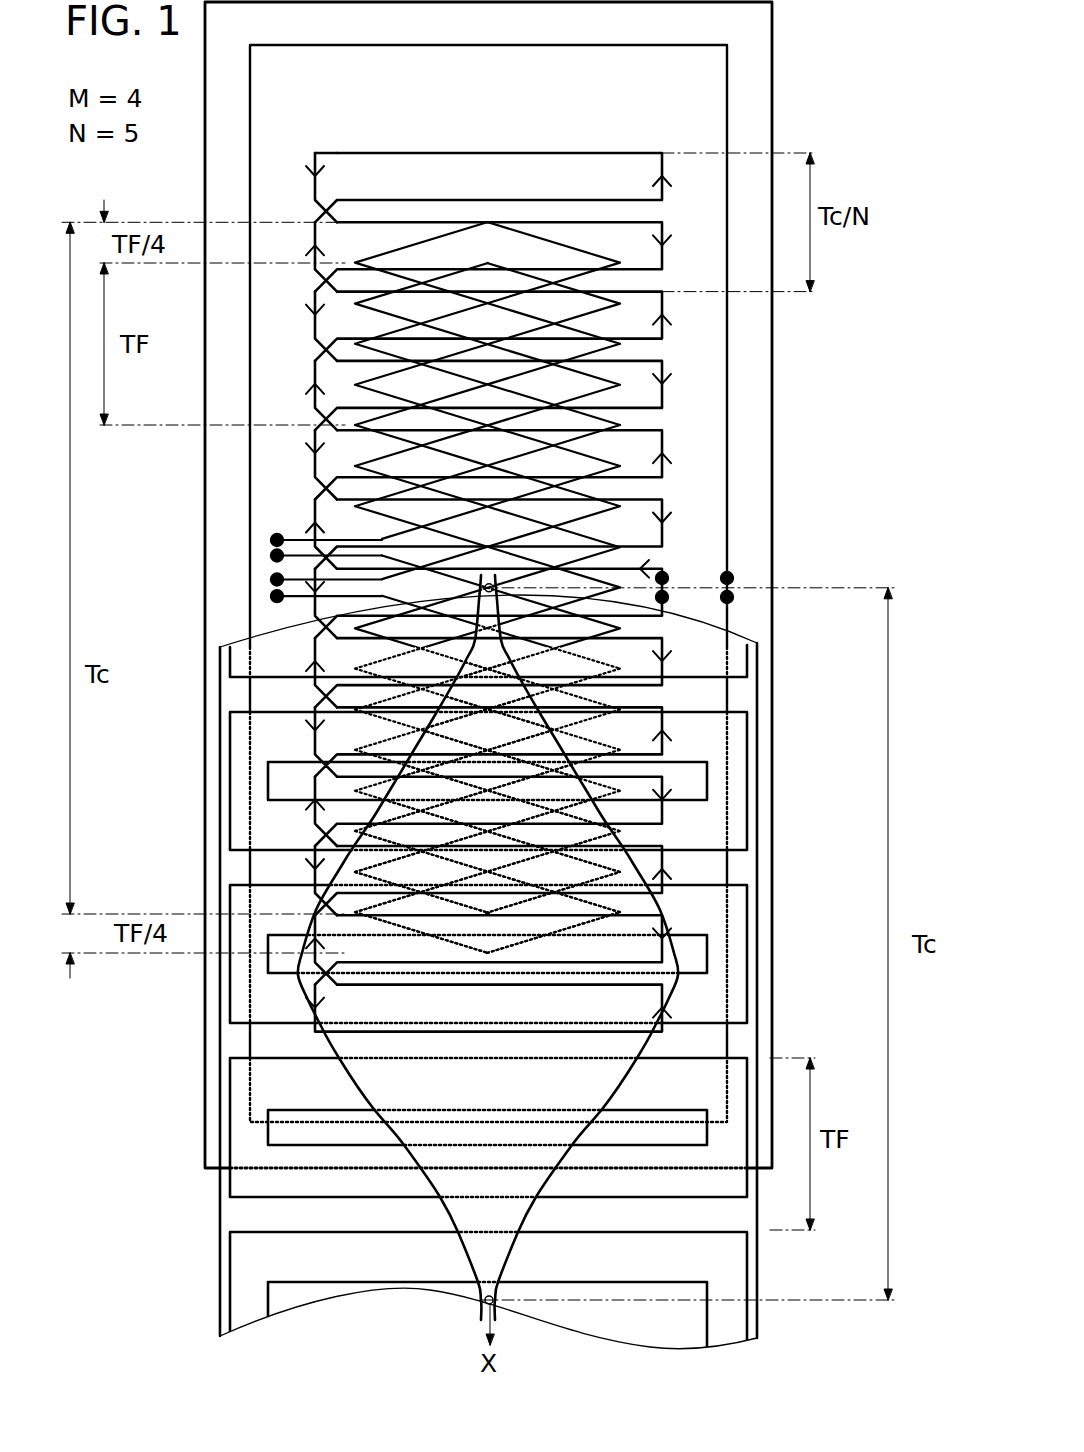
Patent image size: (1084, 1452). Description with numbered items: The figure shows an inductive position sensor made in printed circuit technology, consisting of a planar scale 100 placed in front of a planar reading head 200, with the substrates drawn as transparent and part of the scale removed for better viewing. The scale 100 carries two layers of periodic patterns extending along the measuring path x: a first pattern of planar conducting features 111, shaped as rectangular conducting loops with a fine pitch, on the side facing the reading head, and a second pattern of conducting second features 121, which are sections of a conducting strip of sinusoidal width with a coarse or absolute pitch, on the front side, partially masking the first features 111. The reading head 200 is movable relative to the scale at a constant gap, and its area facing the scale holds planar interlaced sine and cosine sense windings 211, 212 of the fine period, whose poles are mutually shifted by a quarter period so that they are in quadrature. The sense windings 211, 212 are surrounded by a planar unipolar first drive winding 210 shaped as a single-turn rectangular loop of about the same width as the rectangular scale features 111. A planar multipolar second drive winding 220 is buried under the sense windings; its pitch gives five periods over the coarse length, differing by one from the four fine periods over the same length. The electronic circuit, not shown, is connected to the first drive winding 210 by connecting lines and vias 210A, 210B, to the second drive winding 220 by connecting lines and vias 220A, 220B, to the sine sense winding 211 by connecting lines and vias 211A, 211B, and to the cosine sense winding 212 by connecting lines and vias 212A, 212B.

The planar scale 100 is at (219, 1188).
The first pattern of planar conducting features 111 is at (748, 714).
The second features 121 is at (630, 1033).
The planar reading head 200 is at (206, 1130).
The first drive winding 210 is at (728, 58).
The connecting line and via 210A is at (729, 576).
The connecting line and via 210B is at (729, 595).
The sine sense winding 211 is at (622, 322).
The connecting line and via 211A is at (272, 538).
The connecting line and via 211B is at (272, 553).
The cosine sense winding 212 is at (603, 272).
The connecting line and via 212A is at (272, 582).
The connecting line and via 212B is at (272, 600).
The second drive winding 220 is at (623, 153).
The connecting line and via 220A is at (664, 575).
The connecting line and via 220B is at (664, 595).